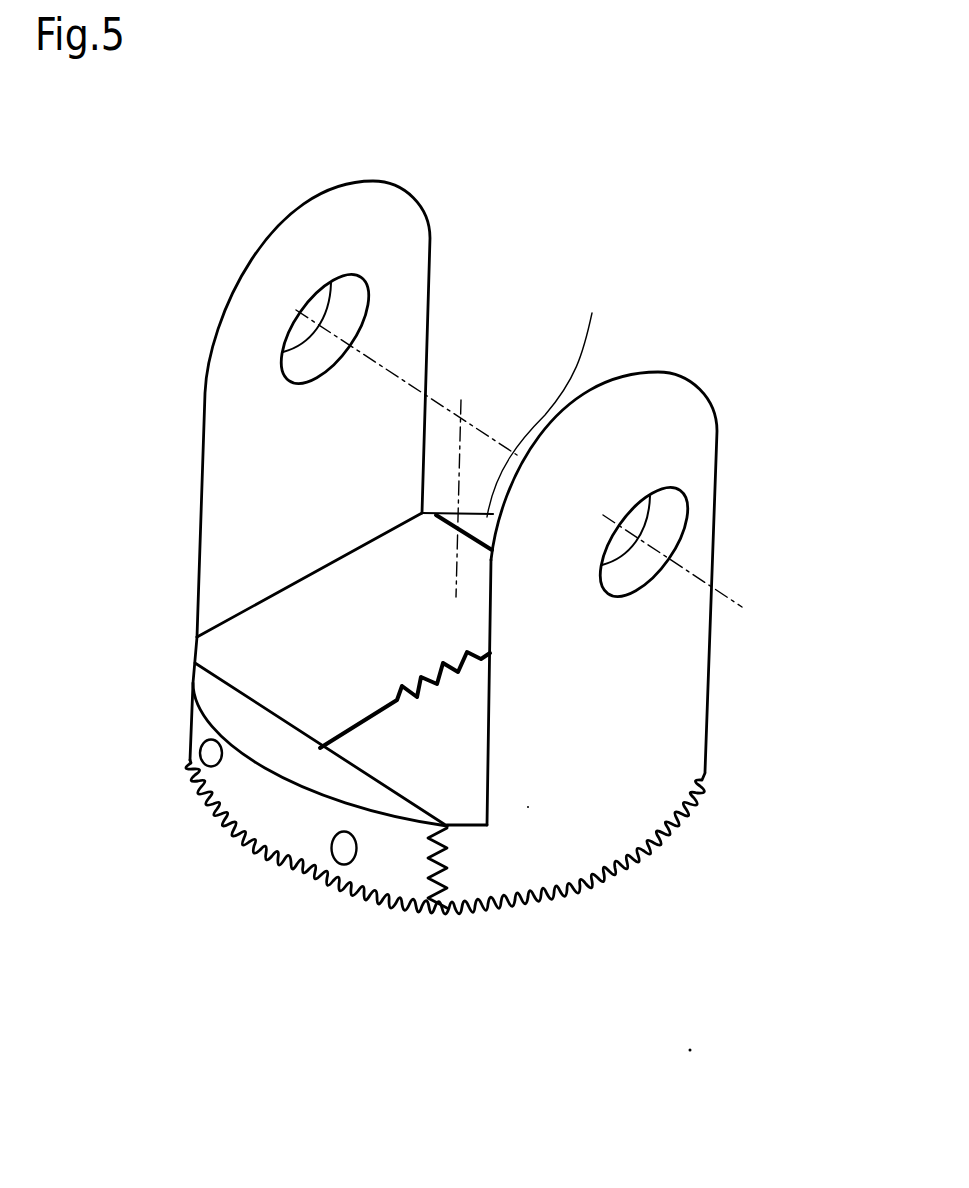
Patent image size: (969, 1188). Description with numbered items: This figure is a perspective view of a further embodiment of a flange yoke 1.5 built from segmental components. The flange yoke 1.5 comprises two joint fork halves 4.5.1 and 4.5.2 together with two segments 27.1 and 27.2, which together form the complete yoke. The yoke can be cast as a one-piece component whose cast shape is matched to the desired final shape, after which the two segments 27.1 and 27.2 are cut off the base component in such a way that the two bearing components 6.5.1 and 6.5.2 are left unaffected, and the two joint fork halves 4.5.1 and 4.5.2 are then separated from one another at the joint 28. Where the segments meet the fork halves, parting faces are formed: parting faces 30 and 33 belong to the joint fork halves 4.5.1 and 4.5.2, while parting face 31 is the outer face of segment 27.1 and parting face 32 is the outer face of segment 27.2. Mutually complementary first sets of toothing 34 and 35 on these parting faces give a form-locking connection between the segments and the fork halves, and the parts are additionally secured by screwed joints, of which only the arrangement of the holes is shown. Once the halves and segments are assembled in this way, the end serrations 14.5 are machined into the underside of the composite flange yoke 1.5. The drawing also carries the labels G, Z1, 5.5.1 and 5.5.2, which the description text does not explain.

The flange yoke 1.5 is at (574, 218).
The joint fork half 4.5.1 is at (372, 380).
The joint fork half 4.5.2 is at (682, 548).
The bearing component 6.5.1 is at (243, 303).
The bearing component 6.5.2 is at (690, 453).
The axis of symmetry G is at (463, 416).
The bore axis Z1 is at (733, 595).
The segment 27.1 is at (197, 692).
The segment 27.2 is at (553, 398).
The base plate portion 5.5.1 is at (220, 650).
The serrated rim portion 5.5.2 is at (506, 875).
The joint 28 is at (363, 722).
The parting face 30 is at (262, 714).
The parting face 31 is at (291, 731).
The parting face 32 is at (437, 521).
The parting face 33 is at (491, 544).
The first set of toothing 34 is at (493, 590).
The first set of toothing 35 is at (340, 773).
The end serrations 14.5 is at (428, 910).